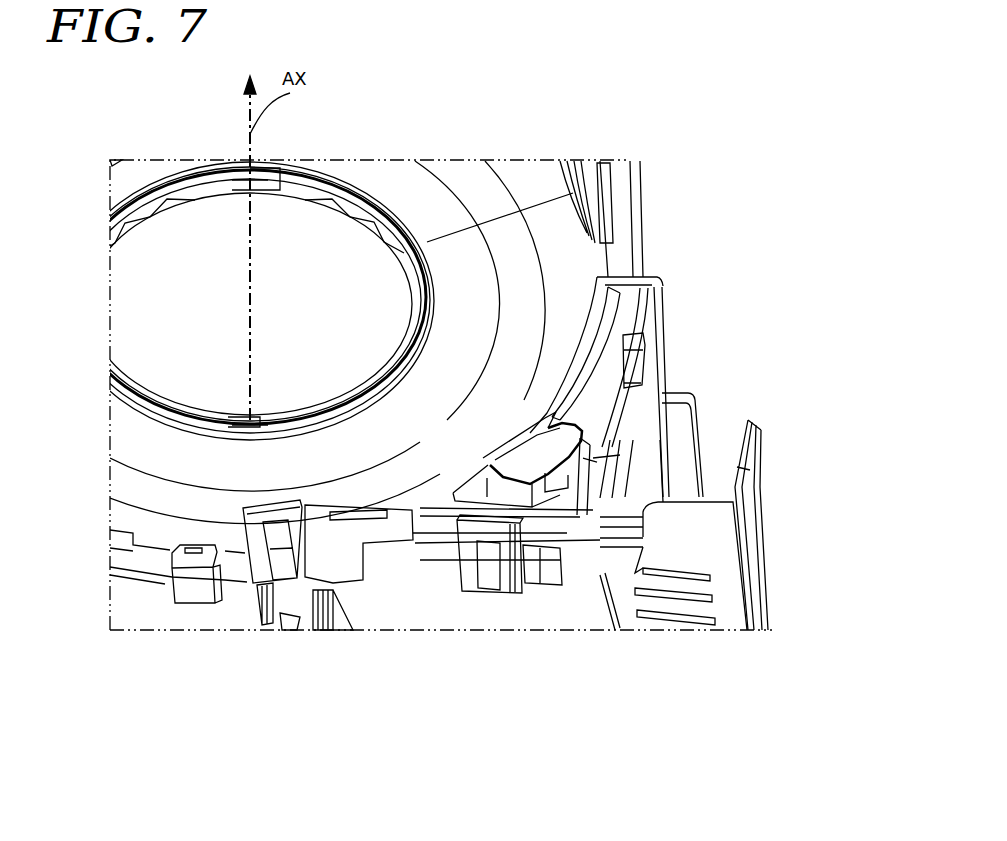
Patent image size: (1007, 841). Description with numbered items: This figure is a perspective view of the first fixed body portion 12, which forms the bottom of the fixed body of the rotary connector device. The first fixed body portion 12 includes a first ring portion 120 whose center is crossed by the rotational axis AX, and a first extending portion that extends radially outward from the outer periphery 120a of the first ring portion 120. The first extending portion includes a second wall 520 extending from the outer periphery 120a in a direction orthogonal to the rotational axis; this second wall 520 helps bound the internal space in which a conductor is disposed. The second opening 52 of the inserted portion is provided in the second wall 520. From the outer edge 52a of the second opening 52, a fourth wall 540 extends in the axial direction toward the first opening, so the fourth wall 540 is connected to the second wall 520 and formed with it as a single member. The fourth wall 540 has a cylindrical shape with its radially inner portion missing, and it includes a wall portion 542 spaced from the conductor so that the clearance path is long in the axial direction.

The first fixed body portion 12 is at (792, 147).
The first ring portion 120 is at (481, 190).
The outer periphery 120a is at (600, 273).
The fourth wall 540 is at (796, 273).
The wall portion 542 is at (640, 482).
The second opening 52 is at (521, 439).
The outer edge 52a is at (505, 482).
The second wall 520 is at (573, 475).